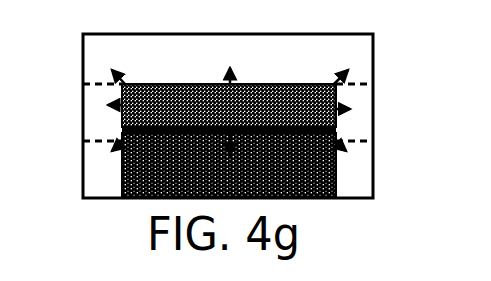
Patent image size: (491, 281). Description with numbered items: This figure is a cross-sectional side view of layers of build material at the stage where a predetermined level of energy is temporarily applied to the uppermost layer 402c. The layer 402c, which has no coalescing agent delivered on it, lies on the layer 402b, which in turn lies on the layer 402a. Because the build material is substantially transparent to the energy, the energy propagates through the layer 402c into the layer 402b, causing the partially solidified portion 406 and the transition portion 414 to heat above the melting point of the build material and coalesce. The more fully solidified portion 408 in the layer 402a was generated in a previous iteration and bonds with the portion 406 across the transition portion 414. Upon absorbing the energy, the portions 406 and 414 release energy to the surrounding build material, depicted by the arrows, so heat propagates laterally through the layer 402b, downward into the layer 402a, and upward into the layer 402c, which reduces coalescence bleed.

The layer of build material 402a is at (83, 183).
The layer of build material 402b is at (83, 125).
The layer of build material 402c is at (83, 73).
The portion 406 is at (128, 84).
The portion 414 is at (338, 137).
The solidified portion 408 is at (336, 170).